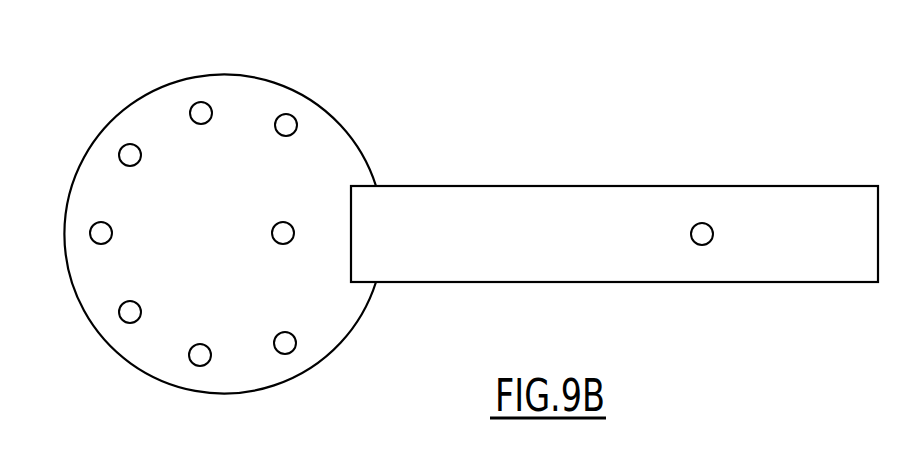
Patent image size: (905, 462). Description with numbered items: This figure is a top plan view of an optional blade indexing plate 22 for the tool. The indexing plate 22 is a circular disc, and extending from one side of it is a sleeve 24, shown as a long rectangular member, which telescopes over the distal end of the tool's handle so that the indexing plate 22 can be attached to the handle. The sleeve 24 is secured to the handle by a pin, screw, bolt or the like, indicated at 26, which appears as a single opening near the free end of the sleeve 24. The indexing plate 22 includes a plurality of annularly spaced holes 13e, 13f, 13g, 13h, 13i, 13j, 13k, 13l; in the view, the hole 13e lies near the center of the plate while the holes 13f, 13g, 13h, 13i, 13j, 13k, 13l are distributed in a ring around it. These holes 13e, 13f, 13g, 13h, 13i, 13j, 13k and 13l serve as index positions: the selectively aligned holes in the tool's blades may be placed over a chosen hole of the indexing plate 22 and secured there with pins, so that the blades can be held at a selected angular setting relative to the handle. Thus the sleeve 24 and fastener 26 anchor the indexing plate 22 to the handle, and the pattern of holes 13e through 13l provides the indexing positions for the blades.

The blade indexing plate 22 is at (330, 133).
The sleeve 24 is at (533, 210).
The pin, screw, bolt or the like 26 is at (703, 228).
The hole 13e is at (277, 234).
The hole 13f is at (286, 118).
The hole 13g is at (201, 108).
The hole 13h is at (129, 150).
The hole 13i is at (95, 233).
The hole 13j is at (124, 318).
The hole 13k is at (199, 362).
The hole 13l is at (290, 348).